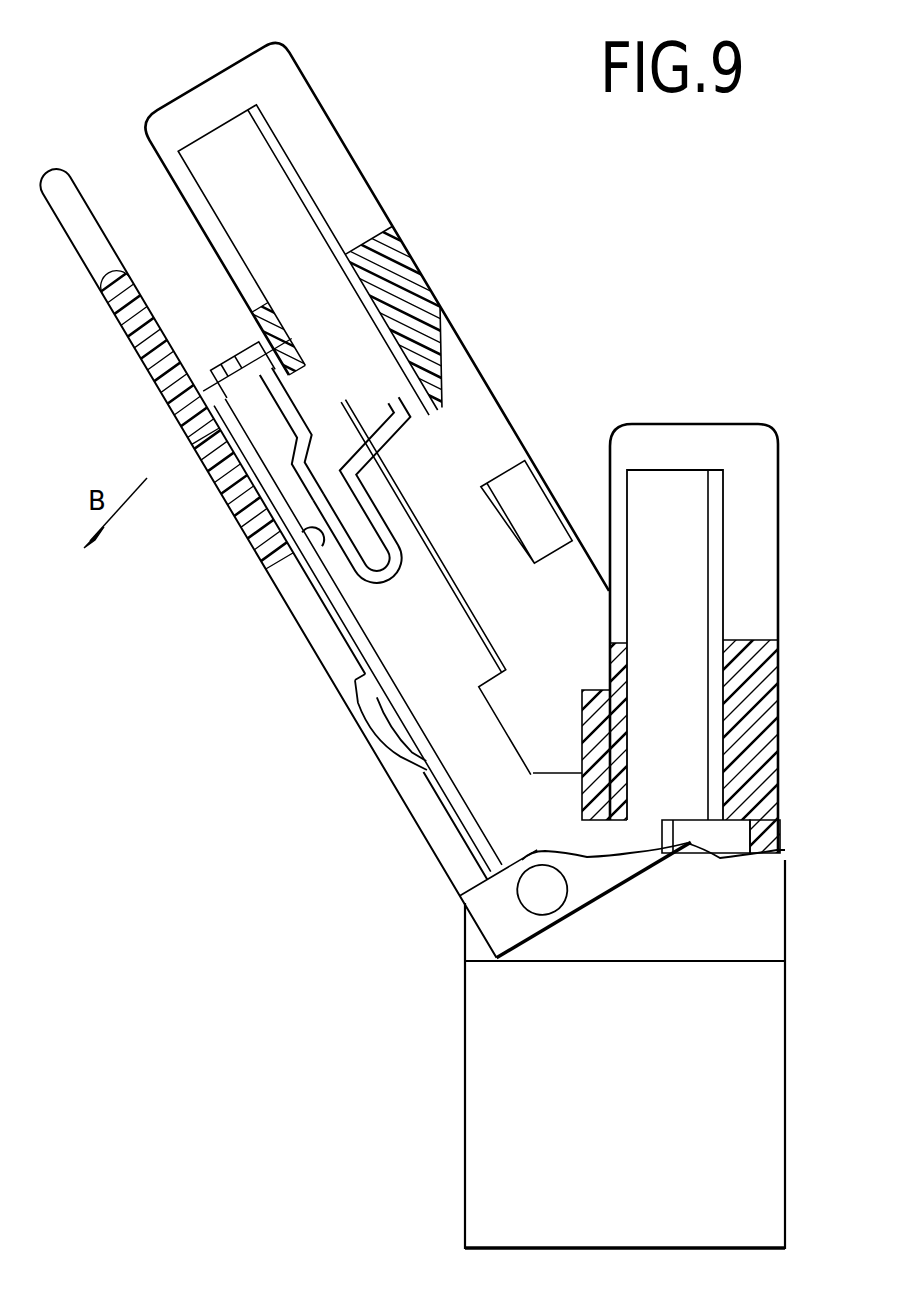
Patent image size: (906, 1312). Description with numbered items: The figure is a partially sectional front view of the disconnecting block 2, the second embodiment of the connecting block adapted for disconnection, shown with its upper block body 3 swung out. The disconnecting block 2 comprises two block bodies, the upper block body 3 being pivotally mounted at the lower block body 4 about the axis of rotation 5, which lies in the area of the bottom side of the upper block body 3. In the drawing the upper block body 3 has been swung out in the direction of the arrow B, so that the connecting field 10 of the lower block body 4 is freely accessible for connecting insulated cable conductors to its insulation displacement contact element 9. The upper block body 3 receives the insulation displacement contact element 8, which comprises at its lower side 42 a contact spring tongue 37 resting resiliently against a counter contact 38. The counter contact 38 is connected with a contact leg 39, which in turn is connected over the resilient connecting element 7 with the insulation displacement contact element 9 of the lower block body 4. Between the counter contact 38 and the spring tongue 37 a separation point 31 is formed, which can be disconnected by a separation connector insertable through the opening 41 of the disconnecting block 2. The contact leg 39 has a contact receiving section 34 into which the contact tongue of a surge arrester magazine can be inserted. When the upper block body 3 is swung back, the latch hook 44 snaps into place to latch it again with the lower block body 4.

The disconnecting block 2 is at (630, 412).
The upper block body 3 is at (428, 330).
The lower block body 4 is at (765, 752).
The axis of rotation 5 is at (548, 893).
The resilient connecting element 7 is at (455, 808).
The insulation displacement contact element 8 is at (292, 212).
The insulation displacement contact element 9 is at (700, 546).
The connecting field 10 is at (712, 420).
The separation point 31 is at (292, 590).
The contact receiving section 34 is at (382, 738).
The contact spring tongue 37 is at (300, 456).
The counter contact 38 is at (313, 546).
The contact leg 39 is at (262, 518).
The opening 41 is at (232, 385).
The lower side 42 is at (390, 412).
The latch hook 44 is at (520, 485).